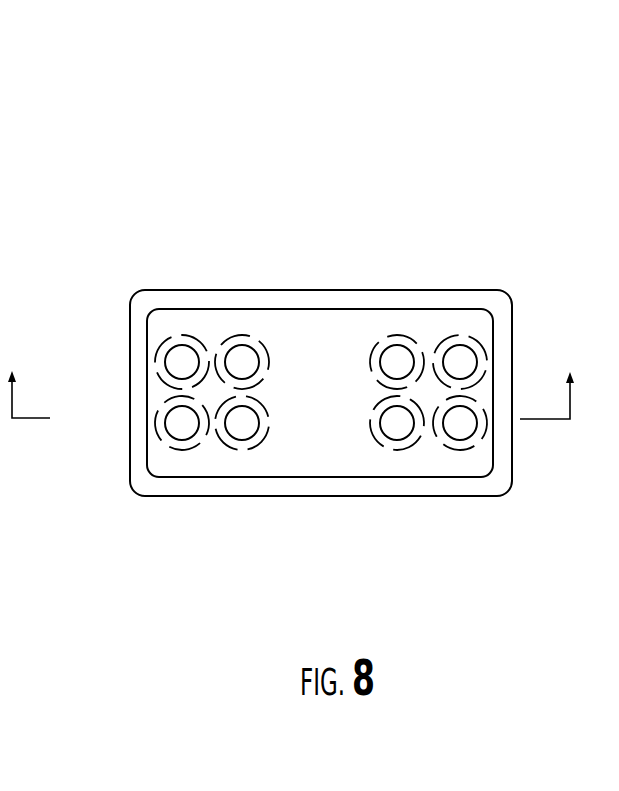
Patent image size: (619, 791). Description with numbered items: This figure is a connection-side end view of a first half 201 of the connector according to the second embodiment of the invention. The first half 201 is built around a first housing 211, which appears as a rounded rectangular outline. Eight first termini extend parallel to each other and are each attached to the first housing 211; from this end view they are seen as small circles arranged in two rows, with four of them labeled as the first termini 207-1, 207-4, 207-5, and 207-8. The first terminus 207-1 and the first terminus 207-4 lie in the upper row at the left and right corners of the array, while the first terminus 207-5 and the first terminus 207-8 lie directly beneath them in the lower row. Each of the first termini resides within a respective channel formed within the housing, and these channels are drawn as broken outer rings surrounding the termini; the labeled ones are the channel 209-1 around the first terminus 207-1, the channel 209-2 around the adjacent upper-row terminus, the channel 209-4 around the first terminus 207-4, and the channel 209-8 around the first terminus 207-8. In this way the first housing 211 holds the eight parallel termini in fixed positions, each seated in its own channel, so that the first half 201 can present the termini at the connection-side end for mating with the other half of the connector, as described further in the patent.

The first half 201 is at (510, 145).
The first terminus 207-1 is at (187, 360).
The first terminus 207-4 is at (463, 362).
The first terminus 207-5 is at (178, 425).
The first terminus 207-8 is at (465, 423).
The channel 209-1 is at (192, 335).
The channel 209-2 is at (248, 333).
The channel 209-4 is at (457, 335).
The channel 209-8 is at (450, 448).
The first housing 211 is at (253, 485).